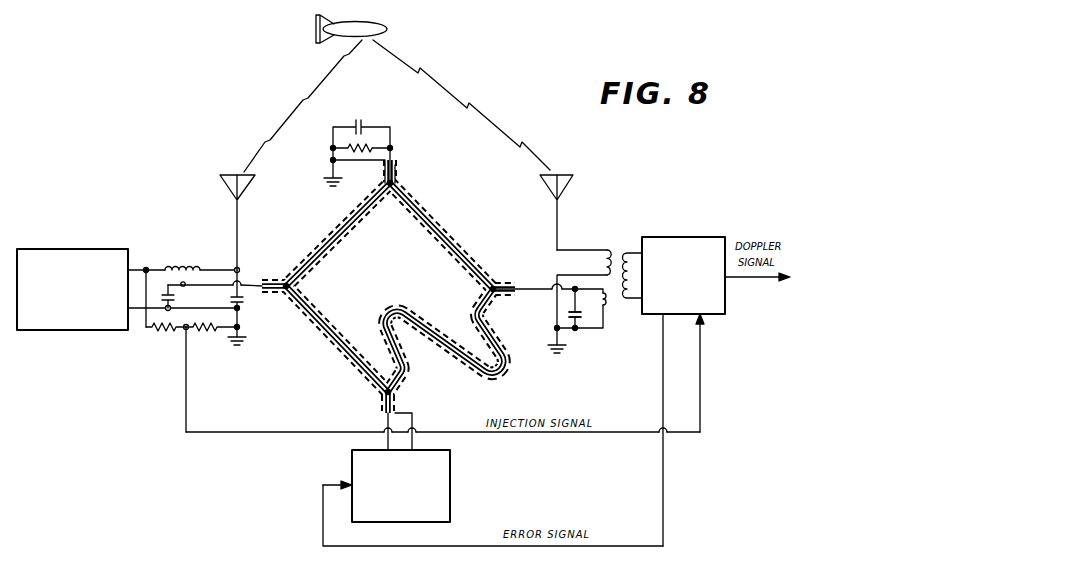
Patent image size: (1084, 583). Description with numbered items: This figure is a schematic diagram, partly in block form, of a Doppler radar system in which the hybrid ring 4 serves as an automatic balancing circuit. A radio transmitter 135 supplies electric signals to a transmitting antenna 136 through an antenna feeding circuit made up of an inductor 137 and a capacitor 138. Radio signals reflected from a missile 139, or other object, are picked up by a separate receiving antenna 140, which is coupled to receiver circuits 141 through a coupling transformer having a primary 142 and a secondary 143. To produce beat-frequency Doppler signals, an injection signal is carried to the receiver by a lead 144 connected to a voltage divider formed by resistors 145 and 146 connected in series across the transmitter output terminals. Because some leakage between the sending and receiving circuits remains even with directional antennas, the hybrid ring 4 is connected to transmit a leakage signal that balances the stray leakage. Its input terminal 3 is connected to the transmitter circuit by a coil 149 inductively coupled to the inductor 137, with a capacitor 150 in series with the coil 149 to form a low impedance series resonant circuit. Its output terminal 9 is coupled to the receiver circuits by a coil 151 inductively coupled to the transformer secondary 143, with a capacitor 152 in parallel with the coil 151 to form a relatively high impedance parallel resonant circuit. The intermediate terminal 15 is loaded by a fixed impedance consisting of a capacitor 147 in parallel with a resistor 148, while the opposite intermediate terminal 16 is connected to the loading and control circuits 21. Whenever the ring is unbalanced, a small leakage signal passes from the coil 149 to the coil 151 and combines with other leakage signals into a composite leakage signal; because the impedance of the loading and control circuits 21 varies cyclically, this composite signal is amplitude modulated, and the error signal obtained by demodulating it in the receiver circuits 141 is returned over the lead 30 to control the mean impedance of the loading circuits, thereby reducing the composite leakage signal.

The input terminal 3 is at (287, 284).
The hybrid ring 4 is at (396, 278).
The output terminal 9 is at (495, 288).
The intermediate terminal 15 is at (394, 185).
The intermediate terminal 16 is at (391, 393).
The loading and control circuits 21 is at (452, 484).
The lead 30 is at (665, 489).
The radio transmitter 135 is at (106, 230).
The transmitting antenna 136 is at (239, 239).
The inductor 137 is at (188, 264).
The capacitor 138 is at (246, 302).
The missile 139 is at (385, 32).
The receiving antenna 140 is at (557, 222).
The receiver circuits 141 is at (708, 222).
The primary 142 is at (605, 257).
The secondary 143 is at (624, 248).
The lead 144 is at (298, 413).
The resistor 145 is at (160, 335).
The resistor 146 is at (212, 335).
The capacitor 147 is at (366, 120).
The resistor 148 is at (369, 146).
The coil 149 is at (185, 289).
The capacitor 150 is at (163, 294).
The coil 151 is at (612, 306).
The capacitor 152 is at (569, 315).